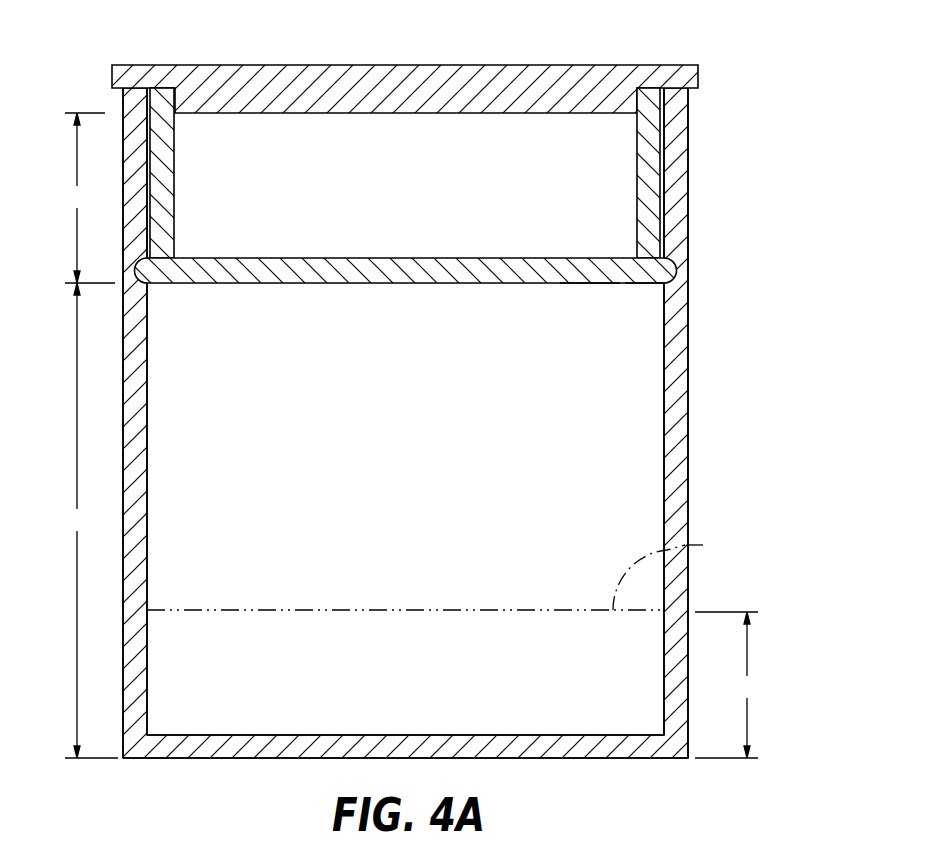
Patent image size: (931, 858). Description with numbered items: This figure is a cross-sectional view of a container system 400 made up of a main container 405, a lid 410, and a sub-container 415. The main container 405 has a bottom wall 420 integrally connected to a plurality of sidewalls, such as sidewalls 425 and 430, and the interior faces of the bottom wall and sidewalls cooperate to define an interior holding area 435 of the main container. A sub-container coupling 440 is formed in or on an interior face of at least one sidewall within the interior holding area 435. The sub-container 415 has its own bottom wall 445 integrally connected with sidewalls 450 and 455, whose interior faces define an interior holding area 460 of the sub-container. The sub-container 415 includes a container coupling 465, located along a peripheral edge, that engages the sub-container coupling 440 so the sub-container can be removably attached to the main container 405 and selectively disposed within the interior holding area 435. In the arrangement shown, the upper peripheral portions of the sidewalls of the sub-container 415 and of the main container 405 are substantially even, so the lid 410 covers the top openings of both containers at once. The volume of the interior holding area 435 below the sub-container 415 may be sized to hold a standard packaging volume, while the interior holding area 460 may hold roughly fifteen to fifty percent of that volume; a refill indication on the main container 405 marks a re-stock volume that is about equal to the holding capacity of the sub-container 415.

The container system 400 is at (80, 33).
The main container 405 is at (427, 452).
The lid 410 is at (582, 75).
The sub-container 415 is at (648, 285).
The bottom wall 420 is at (228, 759).
The sidewall 425 is at (123, 728).
The sidewall 430 is at (689, 685).
The interior holding area 435 is at (482, 514).
The sub-container coupling 440 is at (150, 287).
The bottom wall 445 is at (607, 285).
The sidewall 450 is at (170, 168).
The sidewall 455 is at (644, 166).
The interior holding area 460 is at (492, 205).
The container coupling 465 is at (670, 269).